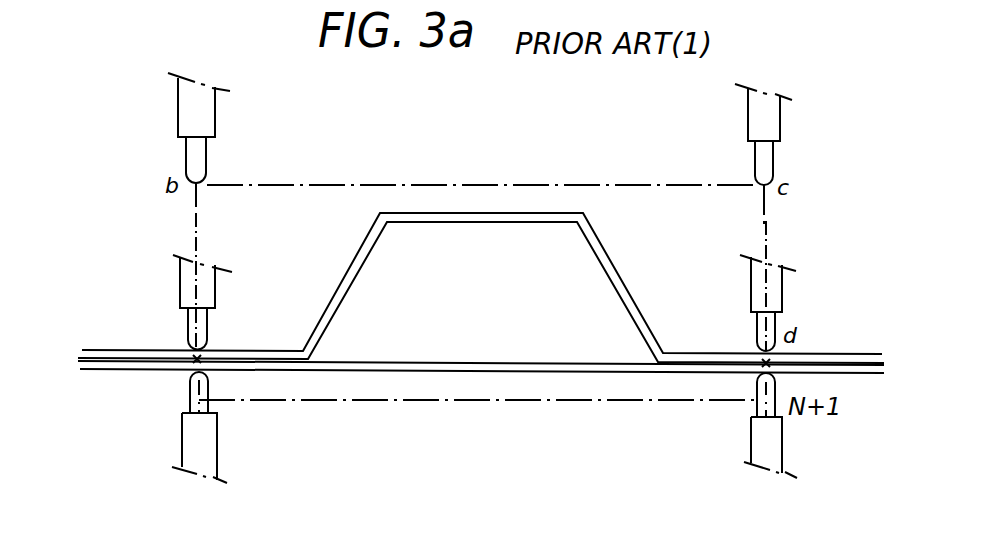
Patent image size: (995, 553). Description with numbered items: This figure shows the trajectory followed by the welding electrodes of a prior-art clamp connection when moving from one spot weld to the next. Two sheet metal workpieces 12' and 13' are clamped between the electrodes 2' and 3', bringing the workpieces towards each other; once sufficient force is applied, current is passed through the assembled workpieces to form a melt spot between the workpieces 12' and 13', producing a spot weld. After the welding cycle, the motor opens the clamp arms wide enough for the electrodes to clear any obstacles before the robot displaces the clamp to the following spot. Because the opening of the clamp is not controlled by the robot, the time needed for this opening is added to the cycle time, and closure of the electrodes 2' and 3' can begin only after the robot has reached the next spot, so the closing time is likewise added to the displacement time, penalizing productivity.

The sheet metal workpiece 12' is at (465, 288).
The sheet metal workpiece 13' is at (464, 399).
The electrode 2' is at (181, 281).
The electrode 3' is at (185, 427).